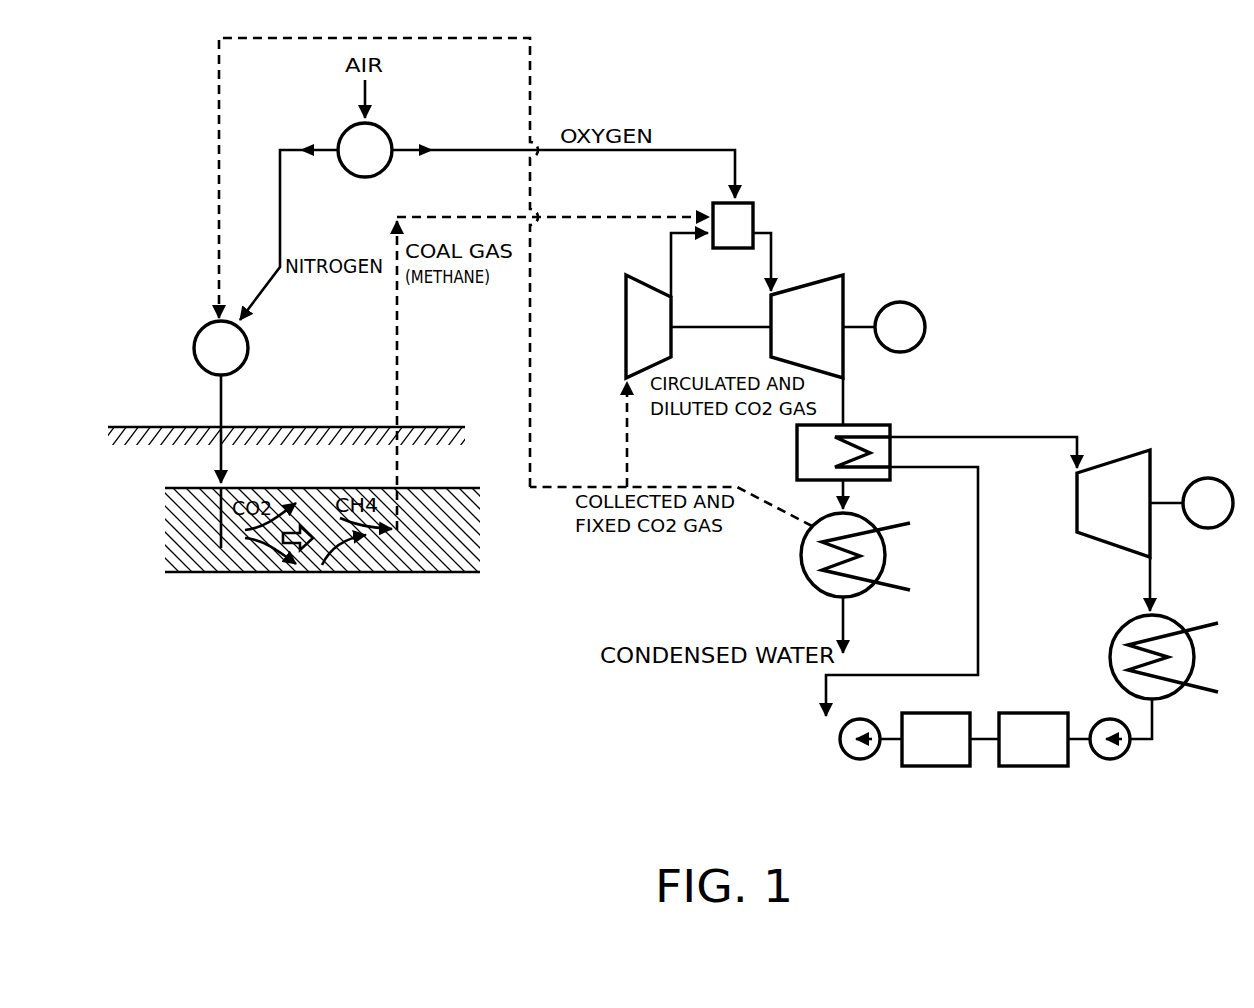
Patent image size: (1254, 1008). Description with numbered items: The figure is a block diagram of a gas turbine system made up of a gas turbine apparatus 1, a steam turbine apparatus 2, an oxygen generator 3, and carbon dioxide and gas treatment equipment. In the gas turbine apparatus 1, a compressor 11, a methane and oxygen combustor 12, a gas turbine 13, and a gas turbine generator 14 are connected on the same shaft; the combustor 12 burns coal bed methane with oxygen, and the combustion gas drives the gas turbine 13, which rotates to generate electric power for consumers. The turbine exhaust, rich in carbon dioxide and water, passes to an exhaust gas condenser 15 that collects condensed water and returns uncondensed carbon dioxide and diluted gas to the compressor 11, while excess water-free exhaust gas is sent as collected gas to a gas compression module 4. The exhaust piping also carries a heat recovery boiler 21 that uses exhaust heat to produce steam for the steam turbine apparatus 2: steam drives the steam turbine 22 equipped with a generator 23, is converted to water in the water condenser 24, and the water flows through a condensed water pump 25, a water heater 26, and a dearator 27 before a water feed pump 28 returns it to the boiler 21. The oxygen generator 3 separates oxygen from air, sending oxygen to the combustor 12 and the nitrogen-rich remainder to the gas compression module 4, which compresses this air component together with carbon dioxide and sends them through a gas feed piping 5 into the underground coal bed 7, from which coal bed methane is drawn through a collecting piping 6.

The gas turbine apparatus 1 is at (836, 186).
The steam turbine apparatus 2 is at (1056, 370).
The oxygen generator 3 is at (391, 136).
The gas compression module 4 is at (200, 333).
The gas feed piping 5 is at (222, 408).
The collecting piping 6 is at (397, 393).
The coal bed 7 is at (308, 488).
The compressor 11 is at (626, 327).
The methane and oxygen combustor 12 is at (753, 200).
The gas turbine 13 is at (803, 283).
The gas turbine generator 14 is at (925, 327).
The exhaust gas condenser 15 is at (801, 567).
The heat recovery boiler 21 is at (890, 478).
The steam turbine 22 is at (1100, 542).
The generator 23 is at (1208, 478).
The water condenser 24 is at (1174, 615).
The condensed water pump 25 is at (1108, 719).
The water heater 26 is at (1032, 713).
The dearator 27 is at (937, 766).
The water feed pump 28 is at (862, 759).